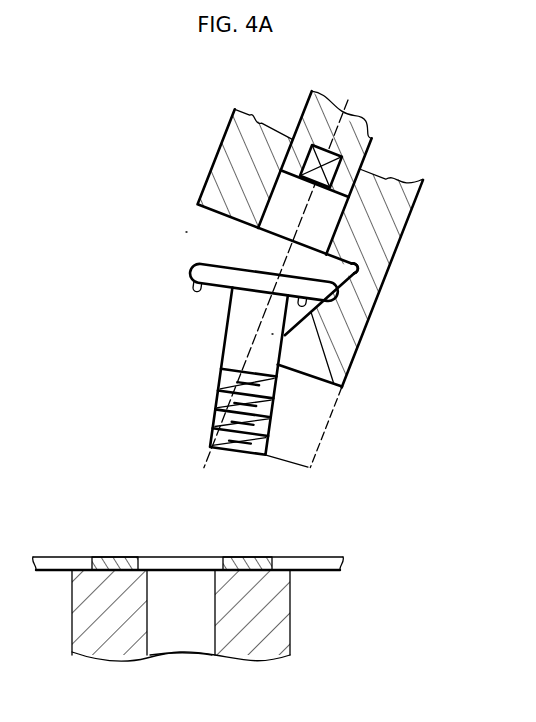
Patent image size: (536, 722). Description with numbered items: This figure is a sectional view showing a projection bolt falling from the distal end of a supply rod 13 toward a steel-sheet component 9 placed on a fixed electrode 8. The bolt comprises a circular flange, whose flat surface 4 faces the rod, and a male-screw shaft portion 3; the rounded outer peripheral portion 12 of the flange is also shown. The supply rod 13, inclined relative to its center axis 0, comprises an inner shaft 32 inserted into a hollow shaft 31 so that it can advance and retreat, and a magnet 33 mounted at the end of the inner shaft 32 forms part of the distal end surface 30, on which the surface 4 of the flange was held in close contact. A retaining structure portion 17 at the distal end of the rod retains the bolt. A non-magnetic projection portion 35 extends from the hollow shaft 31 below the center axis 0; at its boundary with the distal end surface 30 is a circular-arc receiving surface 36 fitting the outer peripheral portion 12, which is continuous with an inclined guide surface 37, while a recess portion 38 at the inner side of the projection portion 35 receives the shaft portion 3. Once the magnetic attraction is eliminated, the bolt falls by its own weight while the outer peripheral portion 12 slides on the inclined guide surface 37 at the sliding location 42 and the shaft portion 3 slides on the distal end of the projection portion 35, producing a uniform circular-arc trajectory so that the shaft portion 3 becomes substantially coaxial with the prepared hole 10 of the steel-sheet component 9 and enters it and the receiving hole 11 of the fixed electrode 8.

The center axis 0 is at (276, 286).
The shaft portion 3 is at (222, 353).
The surface 4 is at (257, 266).
The fixed electrode 8 is at (291, 617).
The steel-sheet component 9 is at (55, 556).
The prepared hole 10 is at (168, 556).
The receiving hole 11 is at (214, 631).
The outer peripheral portion 12 is at (190, 272).
The supply rod 13 is at (215, 128).
The retaining structure portion 17 is at (186, 232).
The distal end surface 30 is at (200, 203).
The hollow shaft 31 is at (390, 204).
The inner shaft 32 is at (373, 145).
The magnet 33 is at (304, 174).
The projection portion 35 is at (349, 376).
The circular-arc receiving surface 36 is at (356, 252).
The inclined guide surface 37 is at (353, 340).
The recess portion 38 is at (272, 334).
The sliding location 42 is at (366, 298).